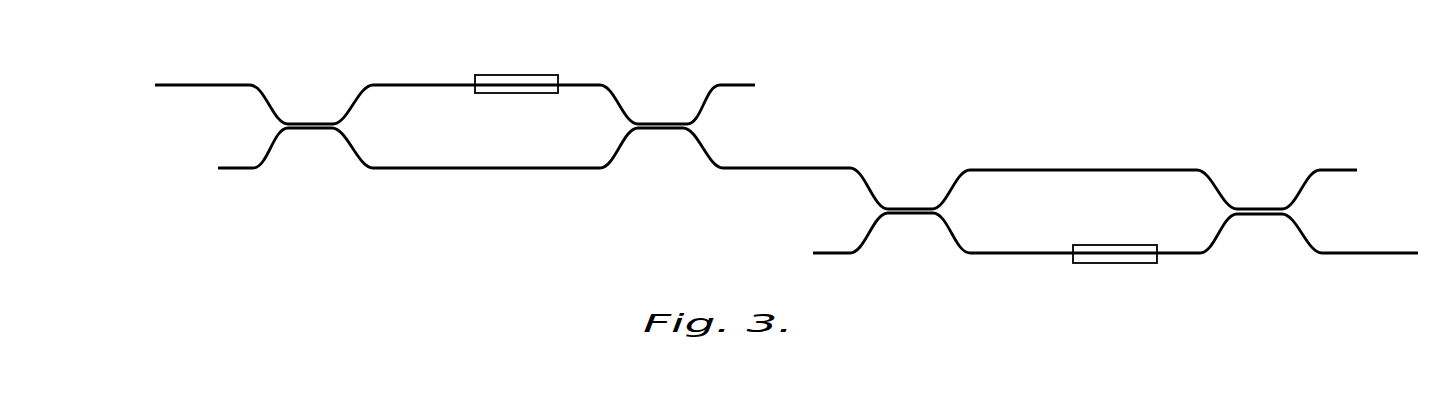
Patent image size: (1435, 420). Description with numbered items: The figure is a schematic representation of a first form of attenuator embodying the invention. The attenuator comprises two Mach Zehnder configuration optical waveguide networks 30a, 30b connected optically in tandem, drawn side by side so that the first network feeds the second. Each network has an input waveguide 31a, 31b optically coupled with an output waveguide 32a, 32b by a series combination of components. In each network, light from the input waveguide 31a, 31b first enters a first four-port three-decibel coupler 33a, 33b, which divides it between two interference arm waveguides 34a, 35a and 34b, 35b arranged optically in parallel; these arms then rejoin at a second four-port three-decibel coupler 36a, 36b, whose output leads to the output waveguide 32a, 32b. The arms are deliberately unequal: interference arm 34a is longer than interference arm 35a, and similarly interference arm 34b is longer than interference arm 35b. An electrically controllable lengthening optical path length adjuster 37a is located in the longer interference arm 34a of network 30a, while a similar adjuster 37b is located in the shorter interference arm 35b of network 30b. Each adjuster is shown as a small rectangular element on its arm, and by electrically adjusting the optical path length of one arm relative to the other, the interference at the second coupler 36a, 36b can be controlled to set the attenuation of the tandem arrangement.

The Mach Zehnder configuration optical waveguide network 30a is at (503, 138).
The Mach Zehnder configuration optical waveguide network 30b is at (1105, 220).
The input waveguide 31a is at (175, 85).
The input waveguide 31b is at (807, 168).
The output waveguide 32a is at (745, 168).
The output waveguide 32b is at (1393, 253).
The first 4-port 3 dB coupler 33a is at (305, 124).
The first 4-port 3 dB coupler 33b is at (908, 213).
The interference arm waveguide 34a is at (420, 85).
The interference arm waveguide 34b is at (1050, 170).
The interference arm waveguide 35a is at (442, 168).
The interference arm waveguide 35b is at (1003, 253).
The second 4-port 3 dB coupler 36a is at (658, 127).
The second 4-port 3 dB coupler 36b is at (1258, 212).
The electrically controllable lengthening optical path length adjuster 37a is at (527, 75).
The electrically controllable lengthening optical path length adjuster 37b is at (1133, 263).